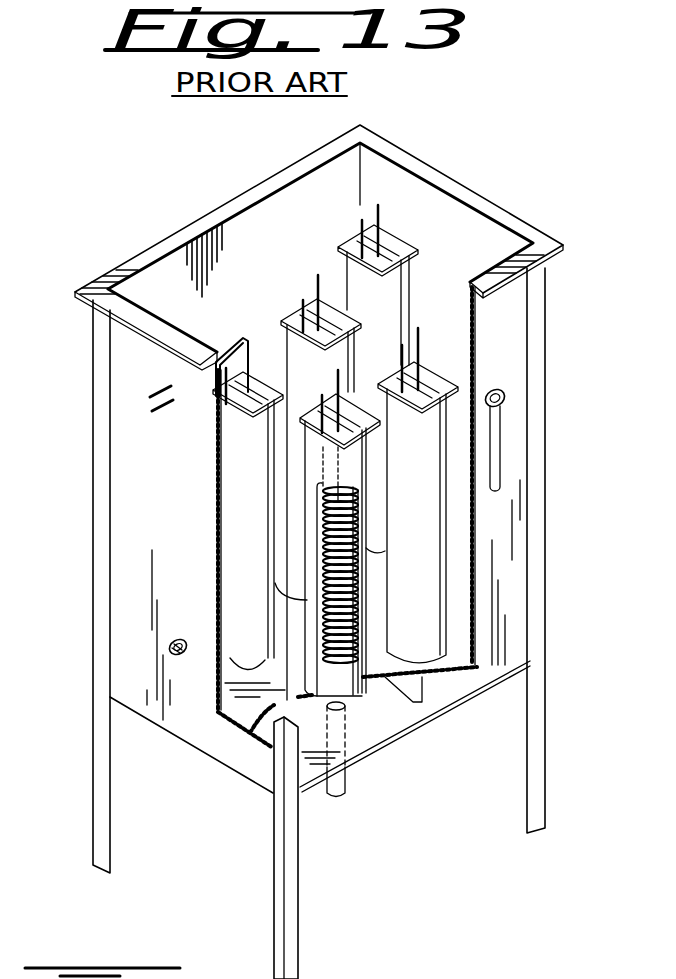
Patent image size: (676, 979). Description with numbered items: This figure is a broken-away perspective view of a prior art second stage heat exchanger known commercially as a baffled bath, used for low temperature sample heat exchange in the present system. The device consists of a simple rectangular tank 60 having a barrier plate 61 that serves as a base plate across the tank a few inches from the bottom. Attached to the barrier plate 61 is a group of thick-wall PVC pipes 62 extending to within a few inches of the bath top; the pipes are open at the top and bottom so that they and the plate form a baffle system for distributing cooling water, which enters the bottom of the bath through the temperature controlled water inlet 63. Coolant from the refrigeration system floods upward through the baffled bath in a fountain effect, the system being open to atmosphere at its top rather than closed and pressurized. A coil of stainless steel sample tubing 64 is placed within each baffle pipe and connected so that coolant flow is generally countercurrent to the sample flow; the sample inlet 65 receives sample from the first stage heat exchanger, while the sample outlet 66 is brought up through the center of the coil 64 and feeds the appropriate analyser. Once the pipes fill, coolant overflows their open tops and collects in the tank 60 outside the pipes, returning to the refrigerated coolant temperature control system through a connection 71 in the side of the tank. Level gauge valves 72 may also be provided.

The rectangular tank 60 is at (540, 200).
The barrier plate 61 is at (262, 740).
The thick-wall PVC pipes 62 is at (378, 630).
The temperature controlled water inlet 63 is at (345, 710).
The coil of stainless steel sample tubing 64 is at (323, 572).
The sample inlet 65 is at (317, 493).
The sample outlet 66 is at (338, 492).
The tank side connection 71 is at (169, 647).
The level gauge valves 72 is at (506, 397).